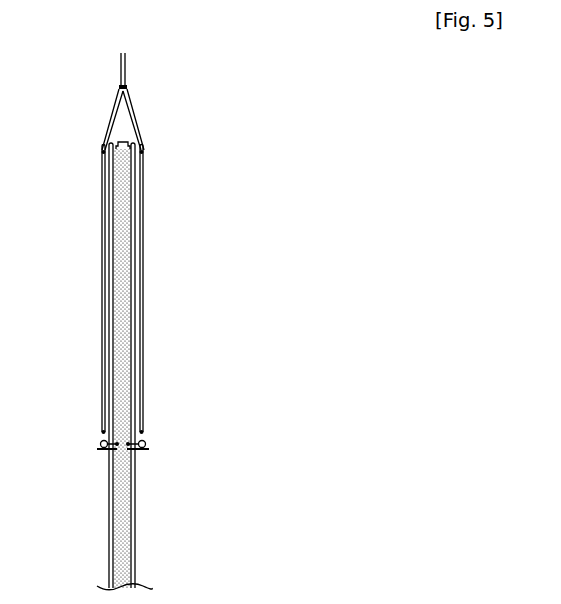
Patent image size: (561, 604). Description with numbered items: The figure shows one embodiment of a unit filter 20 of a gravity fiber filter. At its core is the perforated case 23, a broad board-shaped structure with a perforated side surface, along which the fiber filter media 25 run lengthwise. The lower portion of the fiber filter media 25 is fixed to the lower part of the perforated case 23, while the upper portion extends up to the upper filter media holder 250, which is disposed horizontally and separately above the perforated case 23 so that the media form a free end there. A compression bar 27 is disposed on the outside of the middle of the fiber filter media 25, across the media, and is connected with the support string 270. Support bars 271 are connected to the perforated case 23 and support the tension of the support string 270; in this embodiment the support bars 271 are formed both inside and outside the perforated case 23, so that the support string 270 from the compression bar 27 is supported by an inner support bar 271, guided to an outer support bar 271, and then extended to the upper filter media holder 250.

The unit filter 20 is at (160, 242).
The perforated case 23 is at (122, 252).
The fiber filter media 25 is at (112, 221).
The compression bar 27 is at (100, 445).
The upper filter media holder 250 is at (128, 87).
The support string 270 is at (102, 337).
The support bar 271 is at (103, 152).